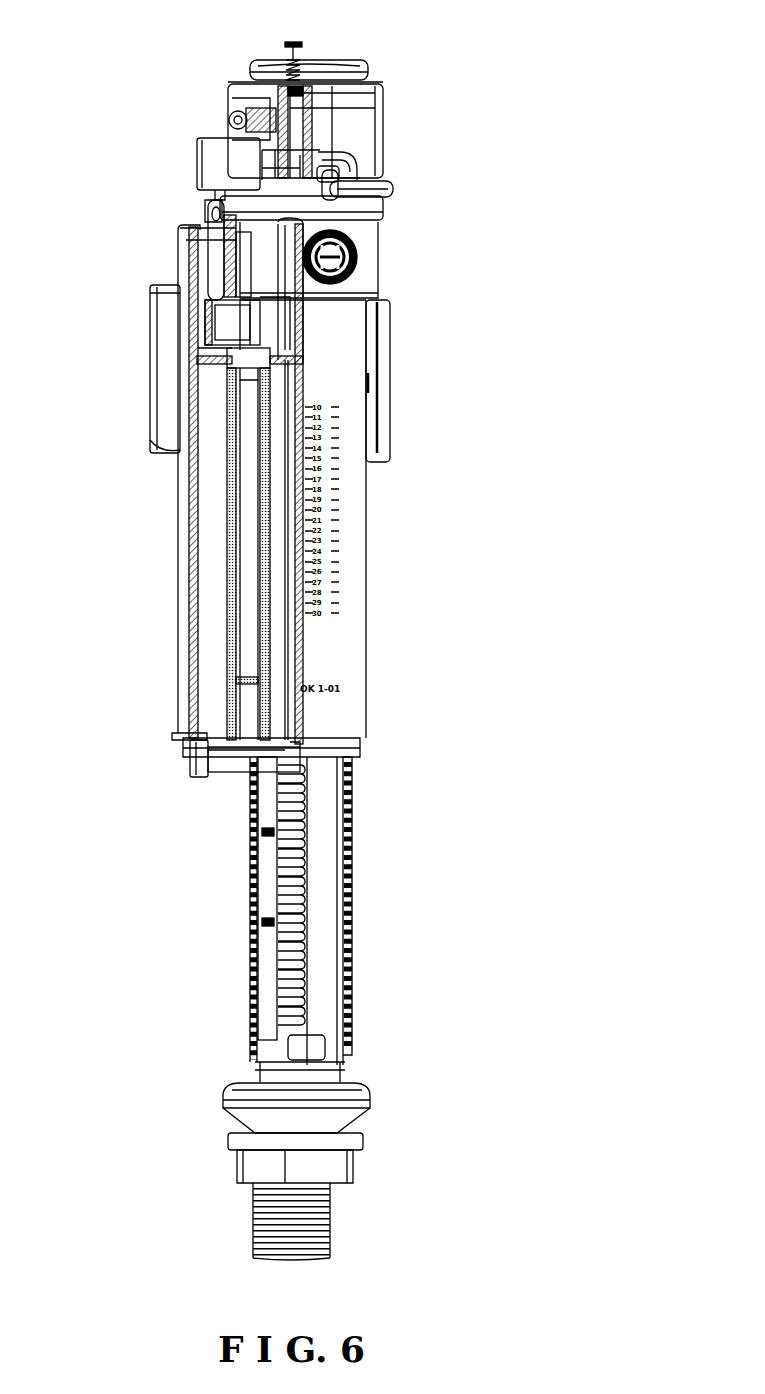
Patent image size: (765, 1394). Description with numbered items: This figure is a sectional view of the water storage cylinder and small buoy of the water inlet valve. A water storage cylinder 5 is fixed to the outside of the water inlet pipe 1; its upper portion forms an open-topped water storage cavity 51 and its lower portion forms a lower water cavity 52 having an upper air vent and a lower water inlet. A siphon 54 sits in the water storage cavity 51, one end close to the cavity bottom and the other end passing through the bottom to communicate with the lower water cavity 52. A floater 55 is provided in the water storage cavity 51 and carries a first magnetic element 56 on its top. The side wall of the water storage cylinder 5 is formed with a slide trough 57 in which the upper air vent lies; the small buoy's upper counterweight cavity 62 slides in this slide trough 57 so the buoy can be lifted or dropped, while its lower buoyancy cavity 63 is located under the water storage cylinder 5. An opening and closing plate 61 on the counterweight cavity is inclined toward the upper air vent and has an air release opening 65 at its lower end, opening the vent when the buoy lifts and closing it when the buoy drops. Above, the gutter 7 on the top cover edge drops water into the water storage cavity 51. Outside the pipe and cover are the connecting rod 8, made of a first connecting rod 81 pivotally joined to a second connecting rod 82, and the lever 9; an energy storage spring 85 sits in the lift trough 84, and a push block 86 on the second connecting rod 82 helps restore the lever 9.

The water inlet pipe 1 is at (320, 807).
The water storage cylinder 5 is at (193, 230).
The gutter 7 is at (262, 75).
The connecting rod 8 is at (405, 154).
The lever 9 is at (318, 167).
The water storage cavity 51 is at (203, 283).
The lower water cavity 52 is at (207, 528).
The siphon 54 is at (222, 316).
The floater 55 is at (218, 255).
The first magnetic element 56 is at (213, 210).
The slide trough 57 is at (223, 457).
The opening and closing plate 61 is at (242, 378).
The upper counterweight cavity 62 is at (233, 670).
The lower buoyancy cavity 63 is at (205, 764).
The air release opening 65 is at (240, 387).
The first connecting rod 81 is at (336, 157).
The second connecting rod 82 is at (348, 176).
The lift trough 84 is at (332, 112).
The energy storage spring 85 is at (298, 50).
The push block 86 is at (394, 188).